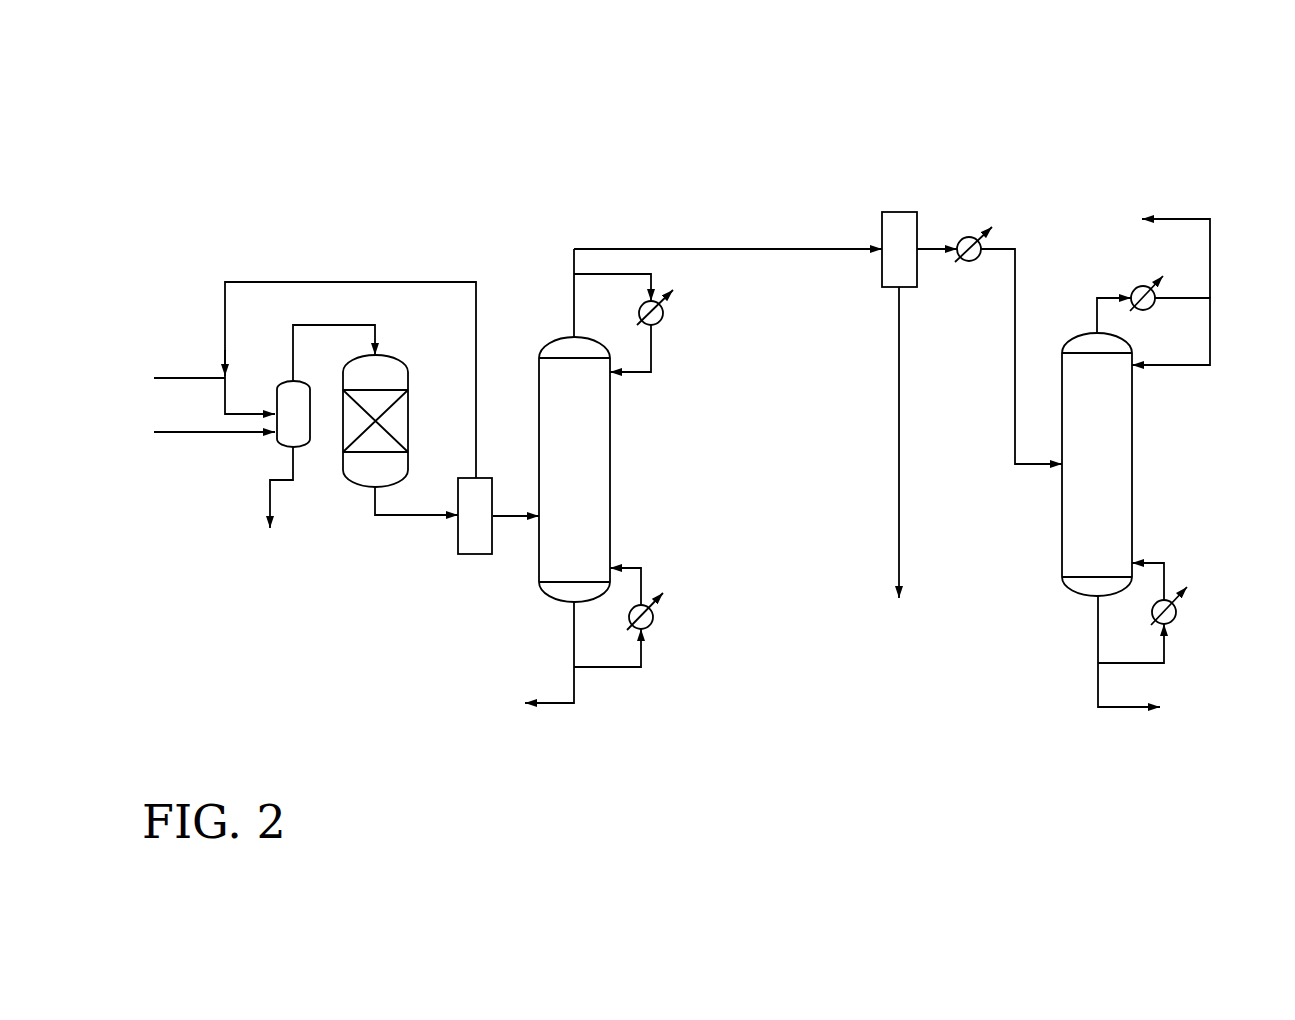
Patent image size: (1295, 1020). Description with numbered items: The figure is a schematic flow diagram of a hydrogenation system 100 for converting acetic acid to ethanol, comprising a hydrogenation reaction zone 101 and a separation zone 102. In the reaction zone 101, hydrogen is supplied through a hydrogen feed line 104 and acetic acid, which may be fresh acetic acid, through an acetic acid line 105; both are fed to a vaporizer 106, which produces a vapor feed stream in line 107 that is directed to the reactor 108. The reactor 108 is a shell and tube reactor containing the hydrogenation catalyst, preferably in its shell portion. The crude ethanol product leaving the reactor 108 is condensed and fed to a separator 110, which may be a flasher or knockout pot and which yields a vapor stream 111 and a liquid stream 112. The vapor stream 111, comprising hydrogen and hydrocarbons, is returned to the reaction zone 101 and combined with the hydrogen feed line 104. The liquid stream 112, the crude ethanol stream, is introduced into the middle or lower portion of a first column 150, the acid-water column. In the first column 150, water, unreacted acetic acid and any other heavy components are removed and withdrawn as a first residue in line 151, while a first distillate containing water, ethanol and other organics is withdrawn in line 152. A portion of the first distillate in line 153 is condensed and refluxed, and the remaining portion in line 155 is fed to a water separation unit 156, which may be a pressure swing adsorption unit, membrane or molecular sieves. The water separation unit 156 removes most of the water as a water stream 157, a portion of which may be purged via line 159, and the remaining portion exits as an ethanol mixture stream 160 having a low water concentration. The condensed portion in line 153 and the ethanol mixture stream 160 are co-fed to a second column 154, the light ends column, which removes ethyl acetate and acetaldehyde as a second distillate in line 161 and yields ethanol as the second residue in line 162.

The hydrogenation system 100 is at (793, 153).
The hydrogenation reaction zone 101 is at (335, 247).
The separation zone 102 is at (532, 762).
The hydrogen feed line 104 is at (162, 379).
The acetic acid line 105 is at (170, 433).
The vaporizer 106 is at (285, 398).
The vapor feed stream line 107 is at (340, 323).
The reactor 108 is at (390, 372).
The separator 110 is at (472, 557).
The vapor stream 111 is at (438, 282).
The liquid stream 112 is at (513, 519).
The first column 150 is at (550, 446).
The first residue line 151 is at (575, 686).
The first distillate line 152 is at (573, 307).
The condensed portion of first distillate line 153 is at (652, 275).
The second column 154 is at (1122, 459).
The remaining portion of first distillate line 155 is at (602, 249).
The water separation unit 156 is at (902, 222).
The water stream 157 is at (900, 330).
The purge line 159 is at (900, 526).
The ethanol mixture stream 160 is at (1015, 285).
The second distillate line 161 is at (1211, 261).
The second residue line 162 is at (1097, 630).